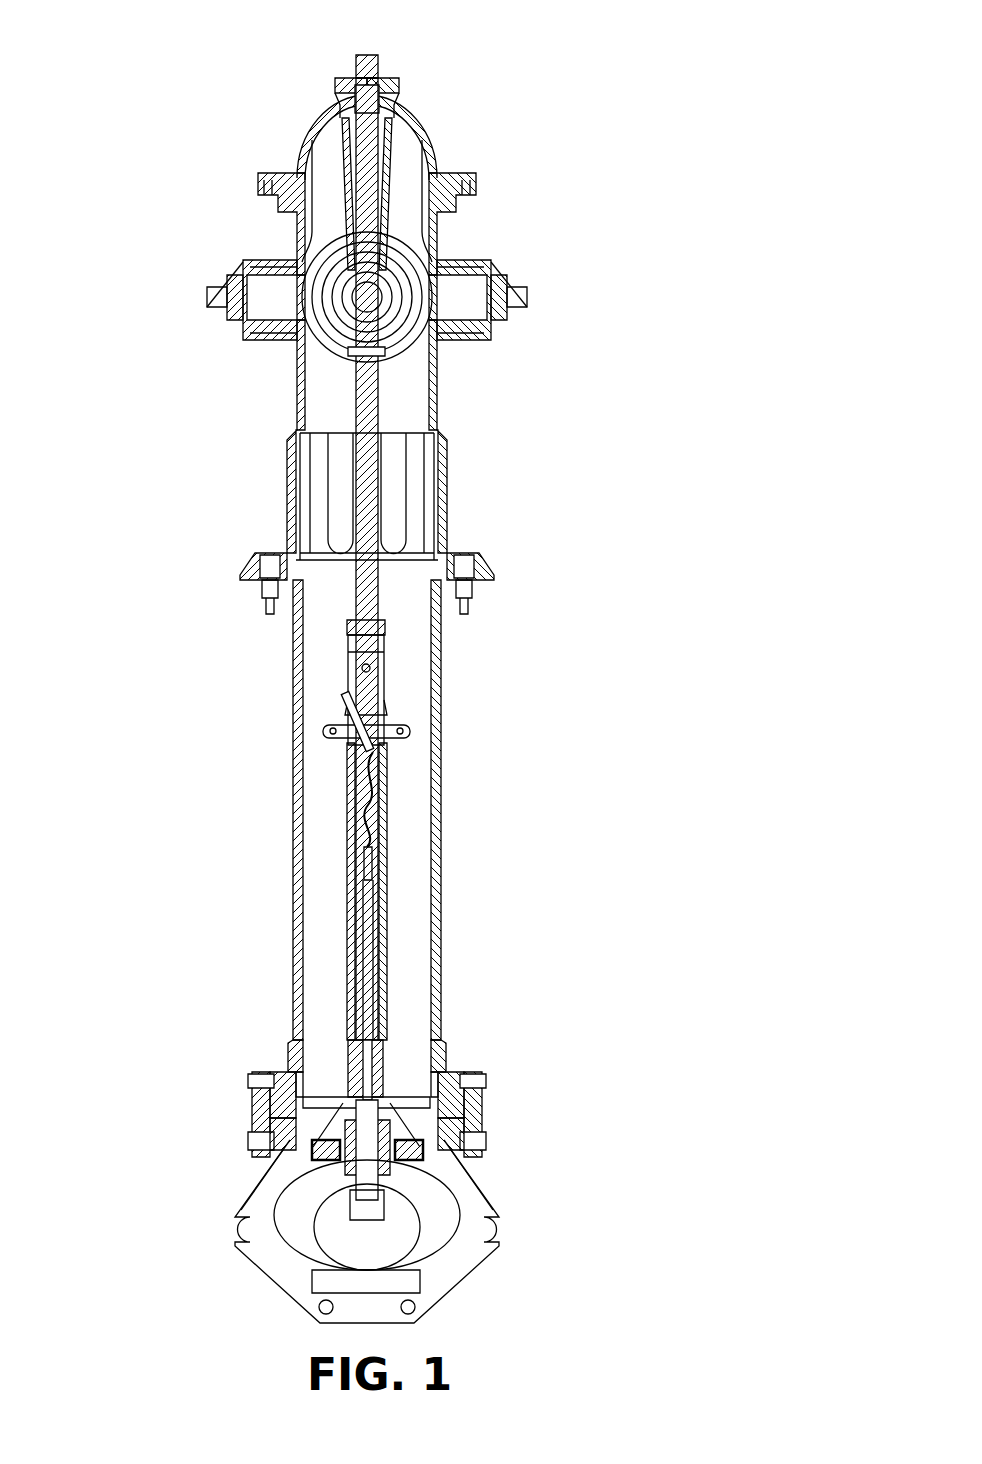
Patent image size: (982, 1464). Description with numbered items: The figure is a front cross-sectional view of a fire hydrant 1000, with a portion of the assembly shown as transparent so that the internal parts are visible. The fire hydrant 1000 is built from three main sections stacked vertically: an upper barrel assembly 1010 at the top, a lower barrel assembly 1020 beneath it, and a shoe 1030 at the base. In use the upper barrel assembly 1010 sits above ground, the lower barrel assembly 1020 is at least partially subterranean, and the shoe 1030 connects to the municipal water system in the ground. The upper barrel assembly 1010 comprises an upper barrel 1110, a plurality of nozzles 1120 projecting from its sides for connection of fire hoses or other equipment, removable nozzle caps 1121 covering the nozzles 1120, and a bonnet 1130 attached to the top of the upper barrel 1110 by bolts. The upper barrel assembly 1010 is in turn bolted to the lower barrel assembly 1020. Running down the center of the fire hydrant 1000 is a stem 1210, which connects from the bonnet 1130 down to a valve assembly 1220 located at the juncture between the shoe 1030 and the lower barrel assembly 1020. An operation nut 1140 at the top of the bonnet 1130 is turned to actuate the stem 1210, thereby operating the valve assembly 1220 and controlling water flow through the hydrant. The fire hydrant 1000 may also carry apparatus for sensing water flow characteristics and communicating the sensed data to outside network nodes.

The fire hydrant 1000 is at (439, 667).
The upper barrel assembly 1010 is at (421, 221).
The lower barrel assembly 1020 is at (501, 900).
The shoe 1030 is at (535, 1190).
The upper barrel 1110 is at (442, 497).
The nozzles 1120 is at (257, 260).
The nozzle caps 1121 is at (210, 297).
The bonnet 1130 is at (430, 128).
The operation nut 1140 is at (373, 63).
The stem 1210 is at (377, 412).
The valve assembly 1220 is at (400, 1097).